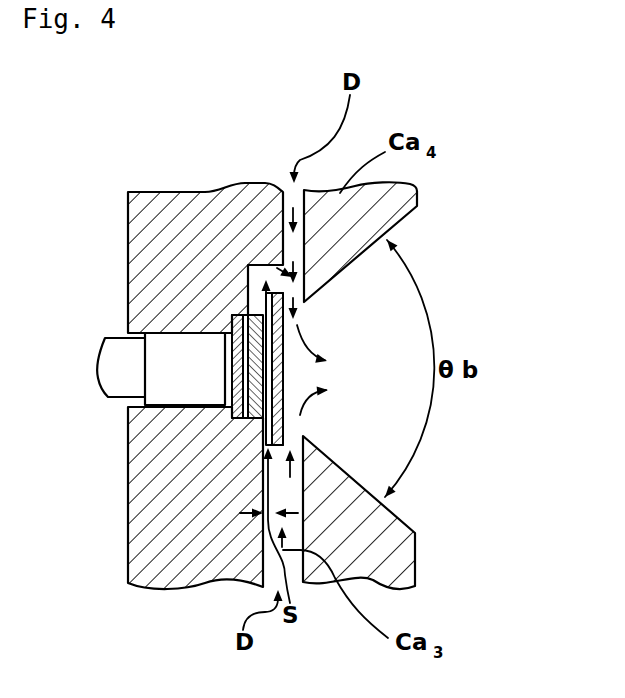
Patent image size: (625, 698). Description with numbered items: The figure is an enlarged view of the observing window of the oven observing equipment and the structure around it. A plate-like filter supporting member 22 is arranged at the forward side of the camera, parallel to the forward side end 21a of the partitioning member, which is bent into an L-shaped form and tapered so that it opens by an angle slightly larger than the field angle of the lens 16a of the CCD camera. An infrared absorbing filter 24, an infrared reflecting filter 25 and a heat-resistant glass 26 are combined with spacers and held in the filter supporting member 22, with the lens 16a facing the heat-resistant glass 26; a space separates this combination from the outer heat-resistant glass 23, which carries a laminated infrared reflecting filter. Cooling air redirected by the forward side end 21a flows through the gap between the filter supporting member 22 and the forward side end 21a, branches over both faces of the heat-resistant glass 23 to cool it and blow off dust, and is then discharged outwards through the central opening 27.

The lens 16a is at (115, 357).
The forward side end 21a is at (388, 215).
The filter supporting member 22 is at (150, 527).
The heat-resistant glass 23 is at (263, 289).
The infrared absorbing filter 24 is at (270, 293).
The infrared reflecting filter 25 is at (252, 315).
The heat-resistant glass 26 is at (237, 313).
The central opening 27 is at (345, 322).